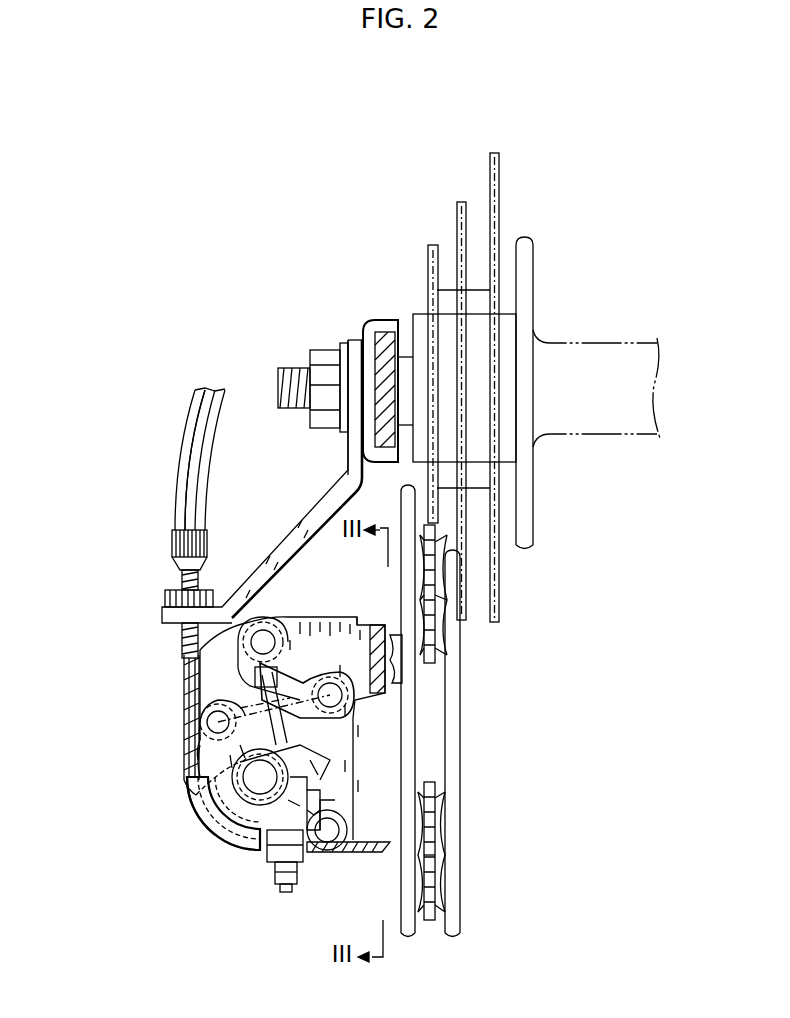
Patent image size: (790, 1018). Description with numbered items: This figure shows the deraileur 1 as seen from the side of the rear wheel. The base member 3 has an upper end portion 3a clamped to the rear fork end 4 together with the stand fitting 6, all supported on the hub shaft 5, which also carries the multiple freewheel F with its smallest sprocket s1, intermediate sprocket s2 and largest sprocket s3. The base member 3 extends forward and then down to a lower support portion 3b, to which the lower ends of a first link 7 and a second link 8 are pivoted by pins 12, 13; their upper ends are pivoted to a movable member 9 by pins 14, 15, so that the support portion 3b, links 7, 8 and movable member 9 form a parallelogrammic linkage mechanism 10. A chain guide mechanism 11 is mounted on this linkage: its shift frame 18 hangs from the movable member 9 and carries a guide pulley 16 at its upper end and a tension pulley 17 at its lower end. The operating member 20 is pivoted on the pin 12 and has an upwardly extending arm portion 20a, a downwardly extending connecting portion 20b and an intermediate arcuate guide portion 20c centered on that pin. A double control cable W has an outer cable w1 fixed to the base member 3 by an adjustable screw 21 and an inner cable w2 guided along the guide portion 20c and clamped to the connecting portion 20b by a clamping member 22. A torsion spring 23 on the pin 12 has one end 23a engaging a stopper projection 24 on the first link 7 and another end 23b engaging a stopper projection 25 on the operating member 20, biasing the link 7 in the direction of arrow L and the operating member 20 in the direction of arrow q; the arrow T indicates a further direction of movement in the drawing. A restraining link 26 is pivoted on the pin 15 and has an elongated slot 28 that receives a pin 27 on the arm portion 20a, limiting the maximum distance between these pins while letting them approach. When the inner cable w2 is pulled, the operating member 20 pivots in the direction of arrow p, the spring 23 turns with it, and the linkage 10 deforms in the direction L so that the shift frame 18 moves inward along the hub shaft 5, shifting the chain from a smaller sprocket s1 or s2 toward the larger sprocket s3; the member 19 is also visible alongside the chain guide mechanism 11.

The smallest sprocket s1 is at (433, 245).
The sprocket s2 is at (461, 202).
The largest sprocket s3 is at (496, 153).
The multiple freewheel F is at (502, 181).
The second link 8 is at (370, 752).
The rear fork end 4 is at (358, 322).
The stand fitting 6 is at (382, 320).
The hub shaft 5 is at (282, 395).
The base member 3 is at (185, 700).
The upper end portion 3a is at (348, 340).
The lower support portion 3b is at (290, 740).
The control cable W is at (172, 485).
The outer cable w1 is at (187, 427).
The inner cable w2 is at (190, 728).
The adjustable screw 21 is at (175, 545).
The stopper projection 24 is at (180, 633).
The derailleur 1 is at (178, 712).
The pin 27 is at (190, 722).
The parallelogrammic linkage mechanism 10 is at (363, 730).
The pin 15 is at (395, 705).
The movable member 9 is at (360, 617).
The elongated slot 28 is at (264, 630).
The pin 14 is at (248, 650).
The first link 7 is at (190, 662).
The restraining link 26 is at (185, 678).
The arm portion 20a is at (195, 750).
The pin 12 is at (235, 818).
The operating member 20 is at (230, 858).
The arcuate guide portion 20c is at (228, 848).
The spring end 23a is at (190, 775).
The torsion spring 23 is at (245, 806).
The spring end 23b is at (336, 785).
The stopper projection 25 is at (340, 780).
The connecting portion 20b is at (322, 860).
The pin 13 is at (332, 856).
The clamping member 22 is at (273, 850).
The arrow p is at (303, 913).
The arrow q is at (263, 895).
The direction T is at (343, 588).
The arrow L is at (288, 592).
The outer chain guide plate 19 is at (394, 626).
The chain guide mechanism 11 is at (460, 785).
The guide pulley 16 is at (443, 622).
The shift frame 18 is at (457, 833).
The tension pulley 17 is at (438, 873).